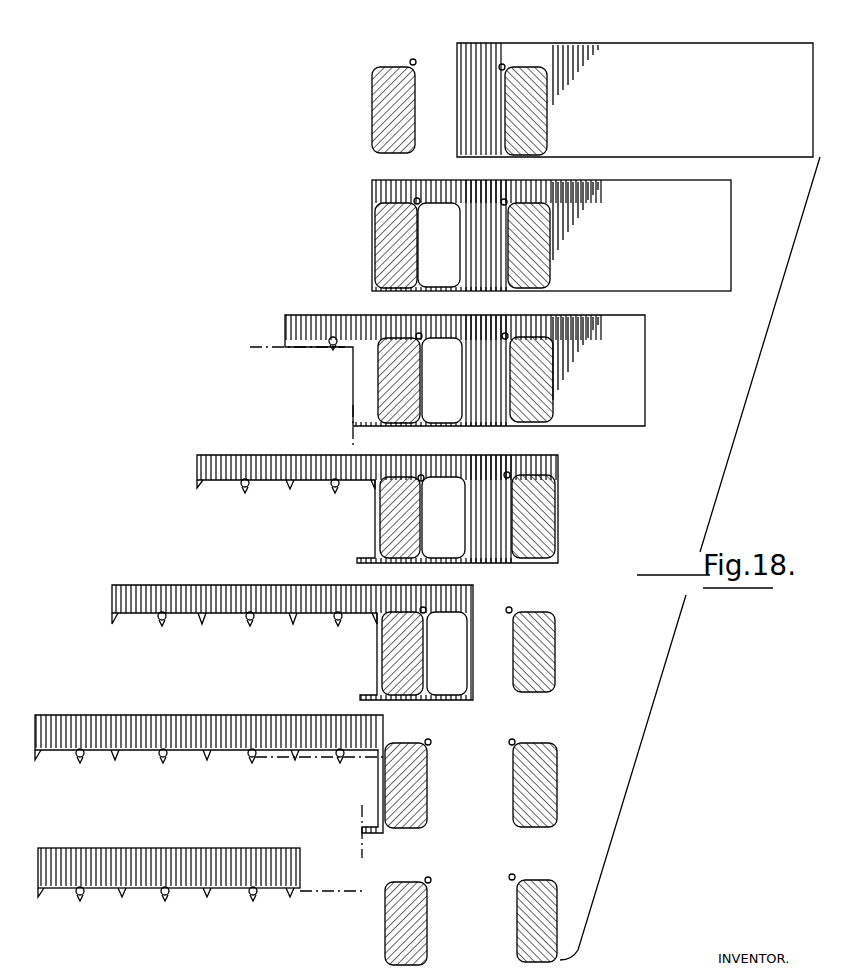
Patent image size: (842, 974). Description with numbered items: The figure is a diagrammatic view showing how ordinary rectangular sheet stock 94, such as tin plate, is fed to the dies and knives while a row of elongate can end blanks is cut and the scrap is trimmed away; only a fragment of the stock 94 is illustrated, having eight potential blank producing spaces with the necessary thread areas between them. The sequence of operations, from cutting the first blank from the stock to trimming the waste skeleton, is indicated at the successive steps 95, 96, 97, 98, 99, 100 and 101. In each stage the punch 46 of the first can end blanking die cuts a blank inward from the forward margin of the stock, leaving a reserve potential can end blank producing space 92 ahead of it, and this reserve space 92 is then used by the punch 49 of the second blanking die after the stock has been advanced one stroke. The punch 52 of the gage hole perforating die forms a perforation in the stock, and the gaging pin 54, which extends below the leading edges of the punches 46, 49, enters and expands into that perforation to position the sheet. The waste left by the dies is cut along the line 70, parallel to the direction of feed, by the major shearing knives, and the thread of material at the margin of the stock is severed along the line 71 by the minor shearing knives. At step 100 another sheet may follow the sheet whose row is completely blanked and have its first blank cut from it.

The punch 46 is at (548, 115).
The punch 49 is at (372, 110).
The punch 52 is at (503, 66).
The gaging pin 54 is at (421, 52).
The line 70 is at (258, 347).
The line 71 is at (353, 408).
The reserve potential can end blank producing space 92 is at (465, 394).
The sheet stock 94 is at (692, 48).
The step 95 is at (635, 88).
The step 96 is at (551, 222).
The step 97 is at (465, 360).
The step 98 is at (377, 496).
The step 99 is at (292, 632).
The step 100 is at (209, 764).
The step 101 is at (174, 861).